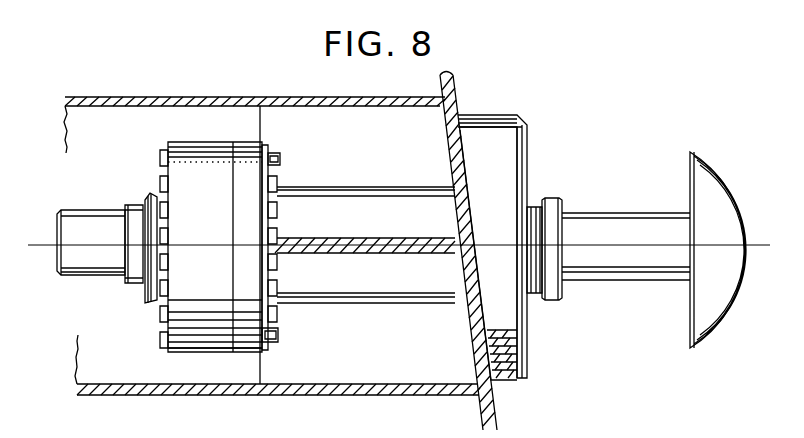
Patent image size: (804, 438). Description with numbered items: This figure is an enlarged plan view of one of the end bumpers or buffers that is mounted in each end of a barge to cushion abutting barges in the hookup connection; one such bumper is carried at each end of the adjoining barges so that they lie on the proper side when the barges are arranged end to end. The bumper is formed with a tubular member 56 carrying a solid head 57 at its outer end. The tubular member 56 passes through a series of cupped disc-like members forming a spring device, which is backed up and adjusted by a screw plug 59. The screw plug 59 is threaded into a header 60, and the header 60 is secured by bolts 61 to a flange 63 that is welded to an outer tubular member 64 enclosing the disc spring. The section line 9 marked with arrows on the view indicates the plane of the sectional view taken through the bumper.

The section line 9- 9 is at (28, 212).
The tubular member 56 is at (609, 228).
The solid head 57 is at (722, 206).
The screw plug 59 is at (146, 290).
The header 60 is at (207, 158).
The bolts 61 is at (281, 160).
The flange 63 is at (248, 352).
The tubular member 64 is at (379, 206).